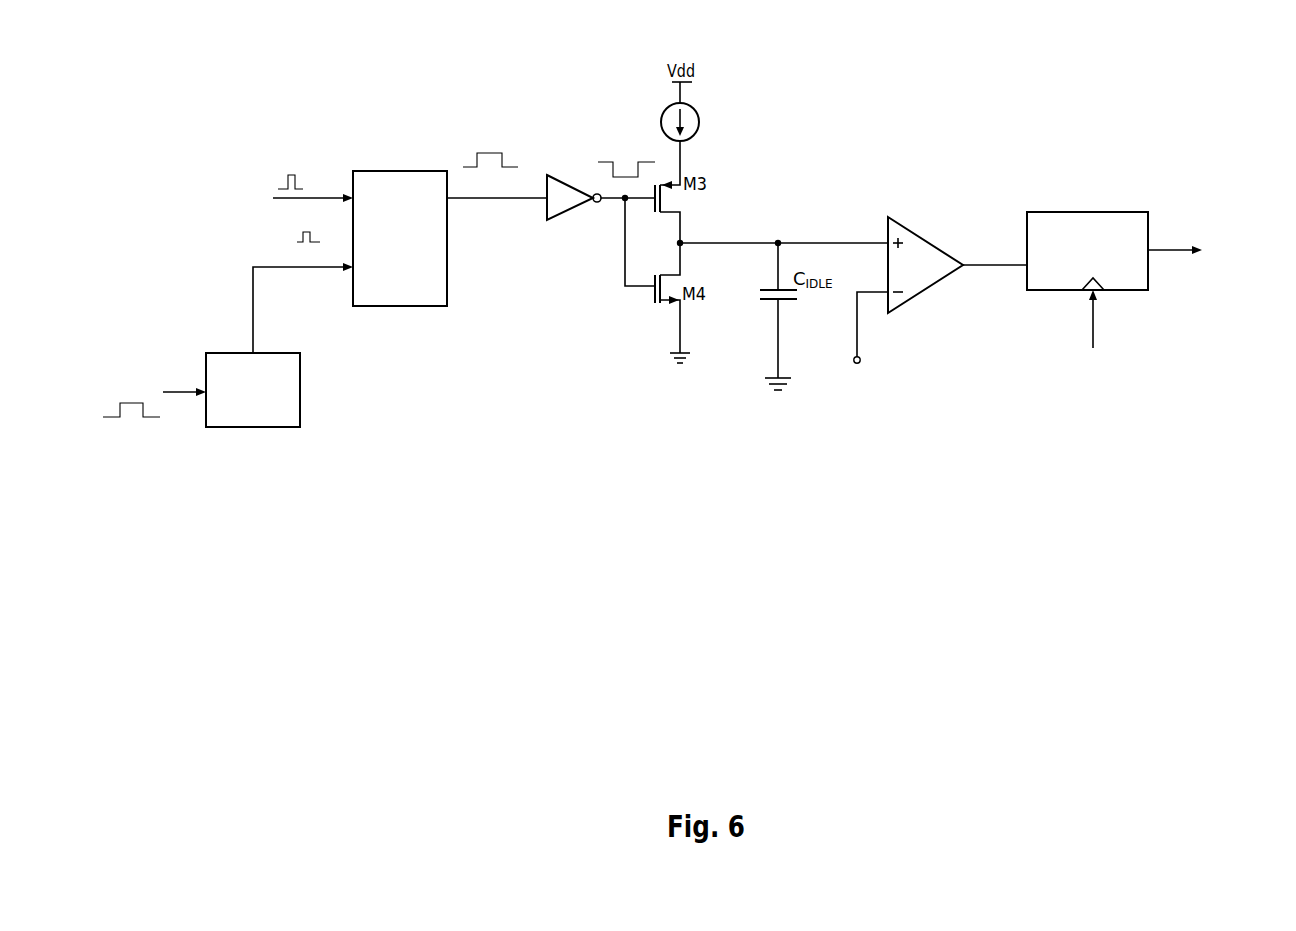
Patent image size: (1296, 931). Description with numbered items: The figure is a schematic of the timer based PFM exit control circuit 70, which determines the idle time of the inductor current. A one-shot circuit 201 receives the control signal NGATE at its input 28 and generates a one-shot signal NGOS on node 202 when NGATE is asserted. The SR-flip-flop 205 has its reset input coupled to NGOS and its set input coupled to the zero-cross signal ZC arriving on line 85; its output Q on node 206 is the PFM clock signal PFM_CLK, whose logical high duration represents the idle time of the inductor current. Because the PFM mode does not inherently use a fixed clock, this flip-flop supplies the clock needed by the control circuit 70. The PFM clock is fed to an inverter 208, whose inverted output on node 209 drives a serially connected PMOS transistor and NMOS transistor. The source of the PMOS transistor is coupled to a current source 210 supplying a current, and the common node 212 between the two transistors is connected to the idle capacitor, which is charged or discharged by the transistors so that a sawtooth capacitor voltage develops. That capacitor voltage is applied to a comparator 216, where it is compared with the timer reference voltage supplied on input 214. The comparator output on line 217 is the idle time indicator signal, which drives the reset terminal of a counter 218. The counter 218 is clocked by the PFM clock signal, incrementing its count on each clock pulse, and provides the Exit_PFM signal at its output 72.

The timer based PFM exit control circuit 70 is at (1128, 68).
The zero crossing signal ZC input 85 is at (314, 197).
The SR-flip-flop 205 is at (408, 171).
The node 202 is at (313, 271).
The one-shot circuit 201 is at (301, 375).
The NGATE signal input 28 is at (179, 388).
The node 206 is at (492, 203).
The inverter 208 is at (567, 178).
The node 209 is at (622, 200).
The current source 210 is at (700, 120).
The common node 212 is at (823, 241).
The comparator 216 is at (924, 233).
The timer reference voltage input 214 is at (857, 337).
The VRESET signal line 217 is at (997, 268).
The counter 218 is at (1086, 212).
The Exit_PFM output 72 is at (1167, 253).